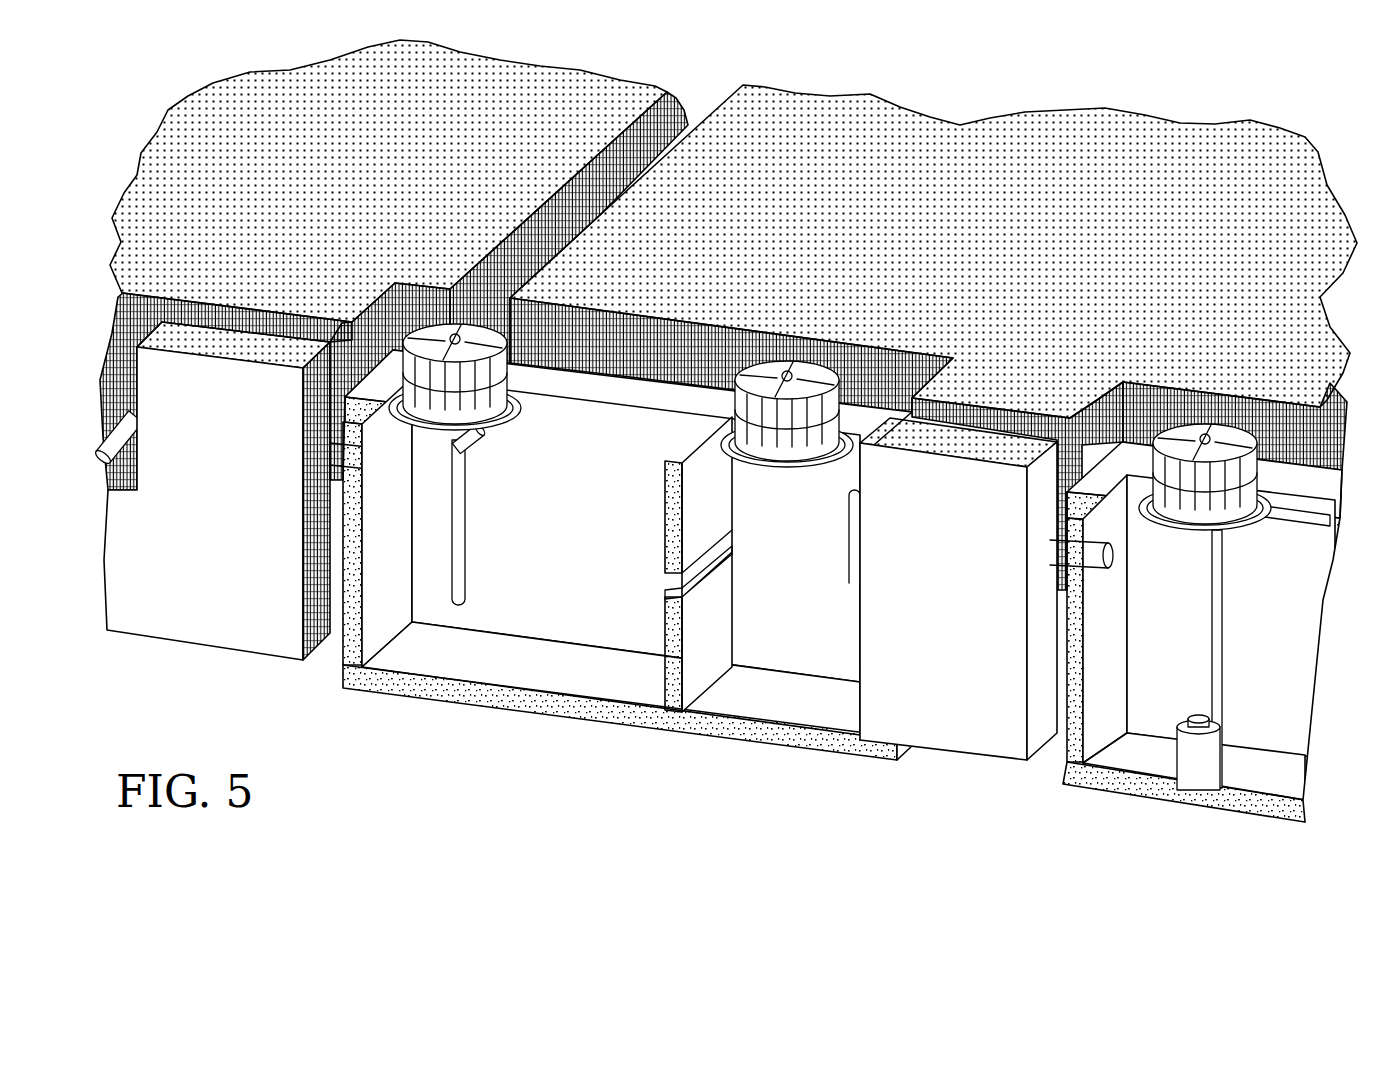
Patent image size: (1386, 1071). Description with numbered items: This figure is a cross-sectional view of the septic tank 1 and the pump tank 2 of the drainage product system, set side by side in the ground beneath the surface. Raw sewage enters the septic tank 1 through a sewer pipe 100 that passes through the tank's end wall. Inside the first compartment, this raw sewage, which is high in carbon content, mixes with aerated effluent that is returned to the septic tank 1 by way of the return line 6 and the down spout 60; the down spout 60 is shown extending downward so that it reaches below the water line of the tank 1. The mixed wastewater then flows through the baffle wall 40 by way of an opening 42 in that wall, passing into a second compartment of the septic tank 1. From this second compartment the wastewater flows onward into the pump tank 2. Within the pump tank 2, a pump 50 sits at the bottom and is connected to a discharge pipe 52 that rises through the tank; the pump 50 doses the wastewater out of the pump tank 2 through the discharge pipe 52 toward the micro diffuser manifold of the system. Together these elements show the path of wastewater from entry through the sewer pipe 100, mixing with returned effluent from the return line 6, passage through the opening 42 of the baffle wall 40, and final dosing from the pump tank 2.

The septic tank 1 is at (547, 620).
The pump tank 2 is at (1173, 690).
The return line 6 is at (477, 452).
The down spout 60 is at (460, 537).
The baffle wall 40 is at (707, 507).
The opening 42 is at (703, 580).
The sewer pipe 100 is at (348, 493).
The pump 50 is at (1220, 758).
The discharge pipe 52 is at (1220, 610).